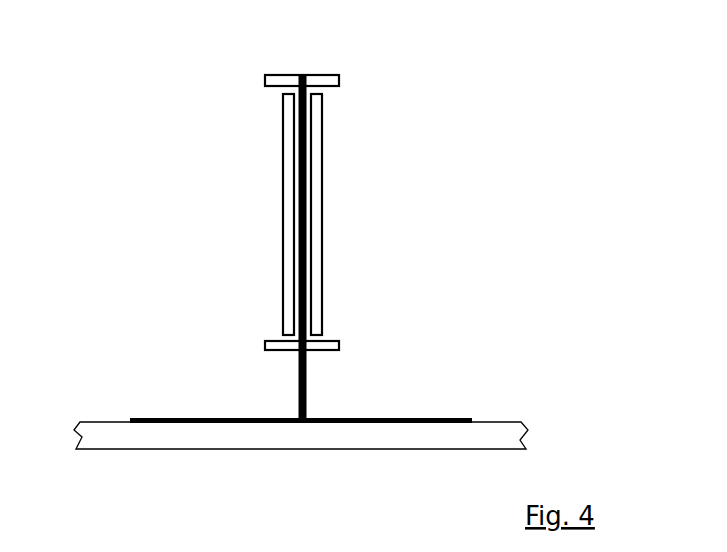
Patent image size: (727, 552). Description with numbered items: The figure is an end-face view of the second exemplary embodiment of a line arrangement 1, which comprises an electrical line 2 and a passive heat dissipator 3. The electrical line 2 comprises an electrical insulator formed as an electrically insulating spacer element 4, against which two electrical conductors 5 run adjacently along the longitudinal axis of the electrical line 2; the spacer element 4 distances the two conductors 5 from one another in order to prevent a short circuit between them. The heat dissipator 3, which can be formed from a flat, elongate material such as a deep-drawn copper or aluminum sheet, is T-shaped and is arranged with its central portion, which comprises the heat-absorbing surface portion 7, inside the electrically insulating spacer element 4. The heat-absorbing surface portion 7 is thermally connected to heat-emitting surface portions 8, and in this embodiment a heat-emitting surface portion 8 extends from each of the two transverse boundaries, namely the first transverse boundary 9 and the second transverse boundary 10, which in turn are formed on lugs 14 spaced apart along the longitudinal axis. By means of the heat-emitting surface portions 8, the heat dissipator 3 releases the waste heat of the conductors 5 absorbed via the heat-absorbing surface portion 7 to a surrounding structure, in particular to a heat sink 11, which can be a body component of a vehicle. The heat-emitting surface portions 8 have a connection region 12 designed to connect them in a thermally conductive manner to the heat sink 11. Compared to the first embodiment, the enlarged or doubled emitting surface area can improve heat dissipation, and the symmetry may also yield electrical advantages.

The line arrangement 1 is at (116, 140).
The electrical line 2 is at (332, 143).
The passive heat dissipator 3 is at (301, 428).
The electrically insulating spacer element 4 is at (291, 74).
The electrical conductors 5 is at (287, 198).
The heat-absorbing surface portion 7 is at (283, 88).
The heat-emitting surface portion 8 is at (280, 417).
The first transverse boundary 9 is at (136, 420).
The second transverse boundary 10 is at (471, 424).
The heat sink 11 is at (100, 428).
The connection region 12 is at (213, 395).
The lugs 14 is at (233, 423).